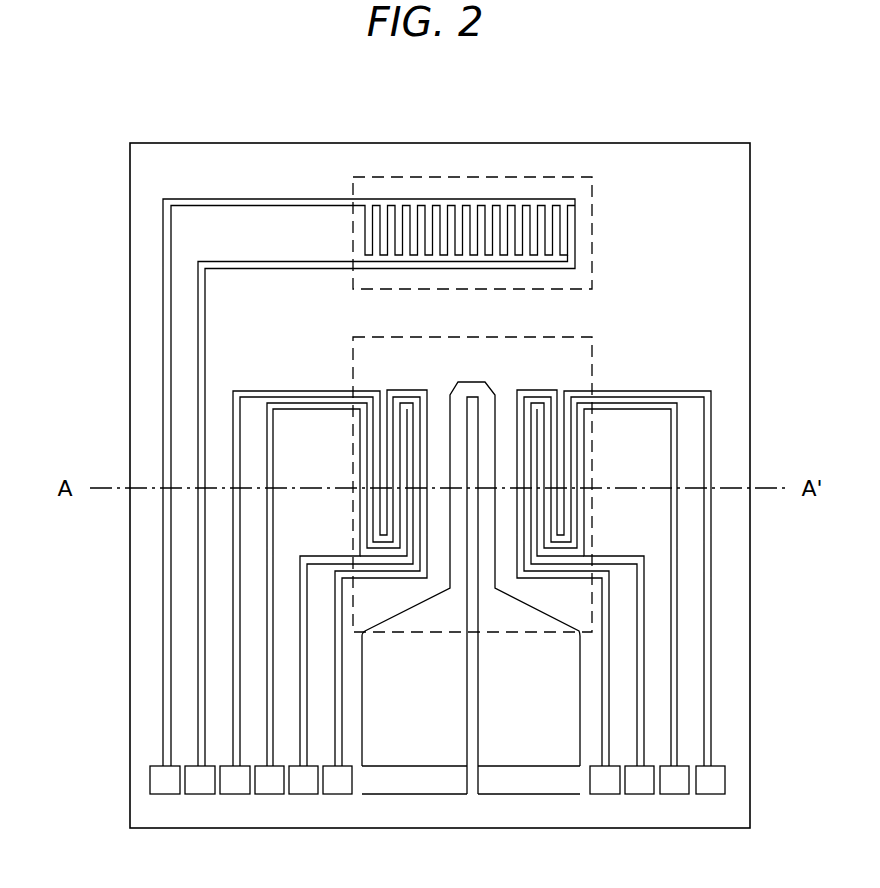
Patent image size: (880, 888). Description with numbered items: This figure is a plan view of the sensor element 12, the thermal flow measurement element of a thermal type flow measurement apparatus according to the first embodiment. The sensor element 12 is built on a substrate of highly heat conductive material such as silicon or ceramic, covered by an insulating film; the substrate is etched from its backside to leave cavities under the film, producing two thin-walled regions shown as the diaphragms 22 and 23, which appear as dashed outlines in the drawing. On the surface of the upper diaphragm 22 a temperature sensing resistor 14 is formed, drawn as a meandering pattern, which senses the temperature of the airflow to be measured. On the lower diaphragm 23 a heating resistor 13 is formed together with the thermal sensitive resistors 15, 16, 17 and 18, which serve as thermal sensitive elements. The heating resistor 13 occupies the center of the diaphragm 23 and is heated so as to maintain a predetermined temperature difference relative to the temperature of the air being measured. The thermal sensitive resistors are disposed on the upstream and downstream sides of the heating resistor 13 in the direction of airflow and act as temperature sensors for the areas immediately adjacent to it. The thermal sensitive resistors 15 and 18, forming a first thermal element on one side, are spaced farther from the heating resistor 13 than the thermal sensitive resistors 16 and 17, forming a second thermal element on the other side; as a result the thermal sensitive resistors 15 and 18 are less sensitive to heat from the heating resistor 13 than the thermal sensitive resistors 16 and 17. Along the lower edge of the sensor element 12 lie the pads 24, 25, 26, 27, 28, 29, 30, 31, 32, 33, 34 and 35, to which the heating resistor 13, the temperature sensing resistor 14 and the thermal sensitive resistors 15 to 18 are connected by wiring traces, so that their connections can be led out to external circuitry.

The sensor element 12 is at (284, 142).
The heating resistor 13 is at (488, 392).
The temperature sensing resistor 14 is at (521, 200).
The thermal sensitive resistor 15 is at (378, 433).
The thermal sensitive resistor 16 is at (565, 437).
The thermal sensitive resistor 17 is at (578, 507).
The thermal sensitive resistor 18 is at (365, 515).
The diaphragm 22 is at (420, 178).
The diaphragm 23 is at (350, 338).
The pad 24 is at (164, 786).
The pad 25 is at (201, 786).
The pad 26 is at (238, 786).
The pad 27 is at (274, 786).
The pad 28 is at (309, 786).
The pad 29 is at (344, 786).
The pad 30 is at (421, 786).
The pad 31 is at (523, 786).
The pad 32 is at (602, 786).
The pad 33 is at (640, 786).
The pad 34 is at (678, 786).
The pad 35 is at (715, 786).